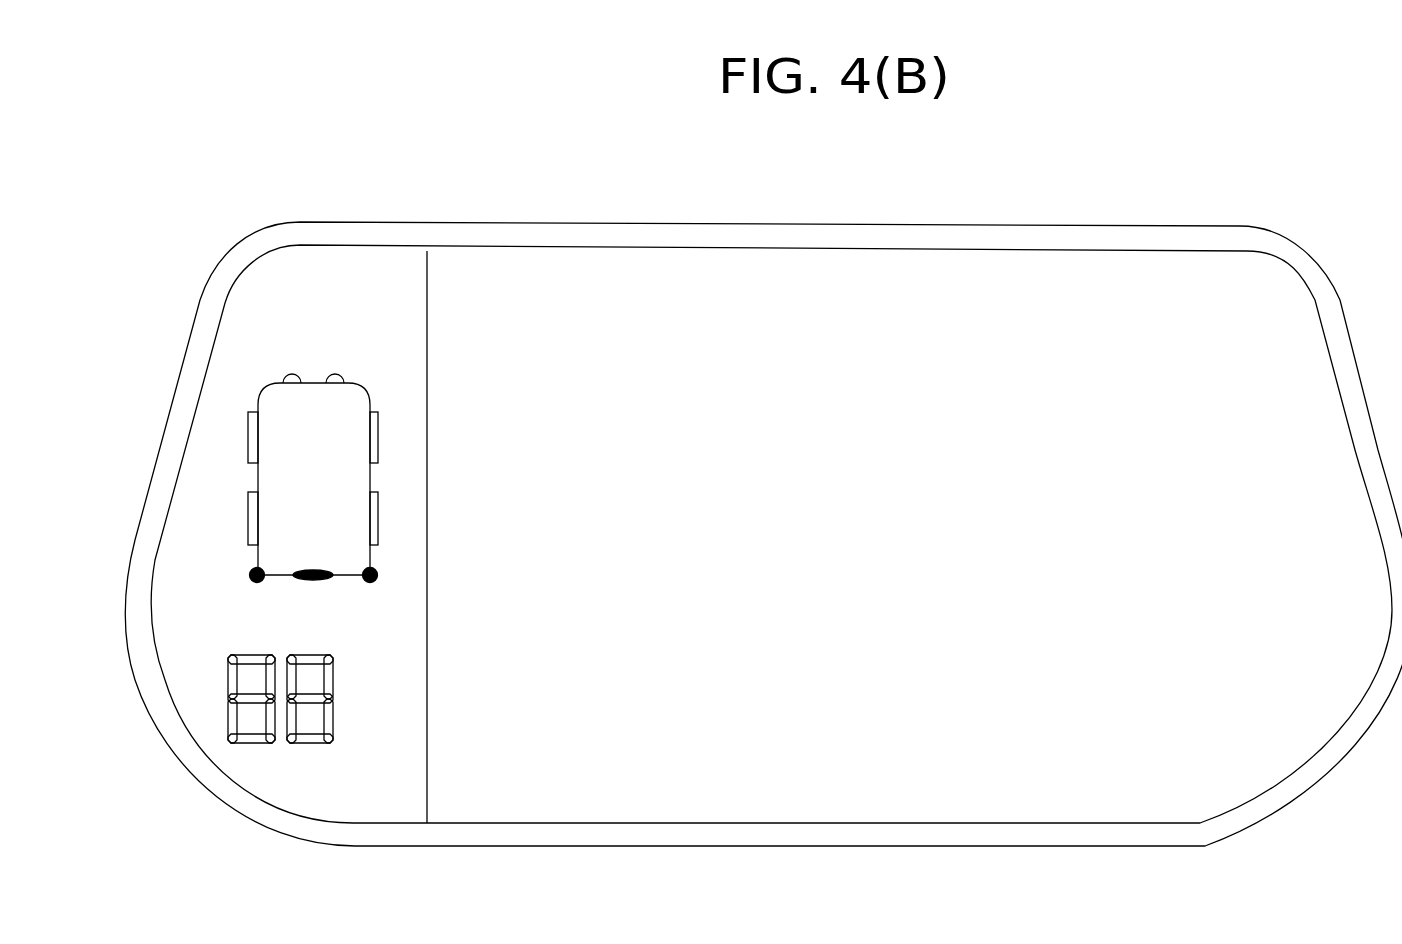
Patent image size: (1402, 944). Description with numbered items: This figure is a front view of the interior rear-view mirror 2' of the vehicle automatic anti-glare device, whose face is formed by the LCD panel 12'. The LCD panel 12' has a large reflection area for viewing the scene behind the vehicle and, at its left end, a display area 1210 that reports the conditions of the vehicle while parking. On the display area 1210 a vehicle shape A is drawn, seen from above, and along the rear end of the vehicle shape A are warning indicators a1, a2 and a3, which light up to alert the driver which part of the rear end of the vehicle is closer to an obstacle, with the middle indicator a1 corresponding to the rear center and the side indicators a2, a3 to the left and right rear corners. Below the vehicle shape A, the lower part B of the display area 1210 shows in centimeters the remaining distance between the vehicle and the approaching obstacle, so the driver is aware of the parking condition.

The display area 1210 is at (363, 293).
The rear-view mirror 2' is at (763, 498).
The LCD panel 12' is at (771, 490).
The vehicle shape A is at (288, 376).
The center sensor indicator a1 is at (312, 572).
The left sensor indicator a2 is at (257, 574).
The right sensor indicator a3 is at (372, 582).
The lower part of the display area B is at (257, 742).